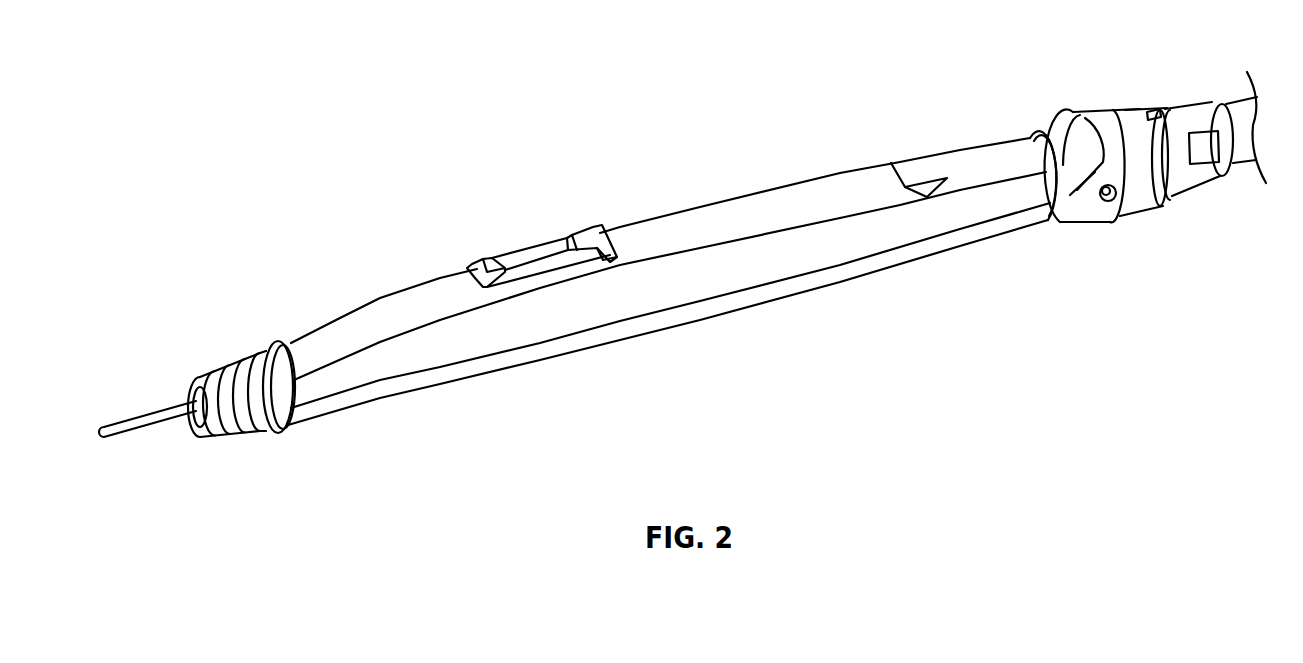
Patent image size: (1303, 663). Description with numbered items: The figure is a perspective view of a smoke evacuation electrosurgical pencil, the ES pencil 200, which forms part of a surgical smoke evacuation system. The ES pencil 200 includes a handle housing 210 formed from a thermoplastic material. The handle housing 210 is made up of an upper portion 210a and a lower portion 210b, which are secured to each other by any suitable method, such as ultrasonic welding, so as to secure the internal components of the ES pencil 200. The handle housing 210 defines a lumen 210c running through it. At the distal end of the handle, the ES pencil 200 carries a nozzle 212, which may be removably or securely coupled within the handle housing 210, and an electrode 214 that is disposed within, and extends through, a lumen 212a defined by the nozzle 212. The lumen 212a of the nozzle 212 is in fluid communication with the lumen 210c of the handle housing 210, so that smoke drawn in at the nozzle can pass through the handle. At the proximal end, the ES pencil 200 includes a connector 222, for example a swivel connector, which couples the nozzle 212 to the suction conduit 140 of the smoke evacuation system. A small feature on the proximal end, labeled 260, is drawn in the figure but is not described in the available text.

The ES pencil 200 is at (218, 111).
The handle housing 210 is at (810, 192).
The upper portion 210a is at (685, 213).
The lower portion 210b is at (752, 287).
The lumen 210c is at (269, 427).
The nozzle 212 is at (237, 358).
The lumen 212a is at (192, 430).
The electrode 214 is at (107, 438).
The connector 222 is at (1107, 118).
The connector window 260 is at (1203, 163).
The suction conduit 140 is at (1247, 108).